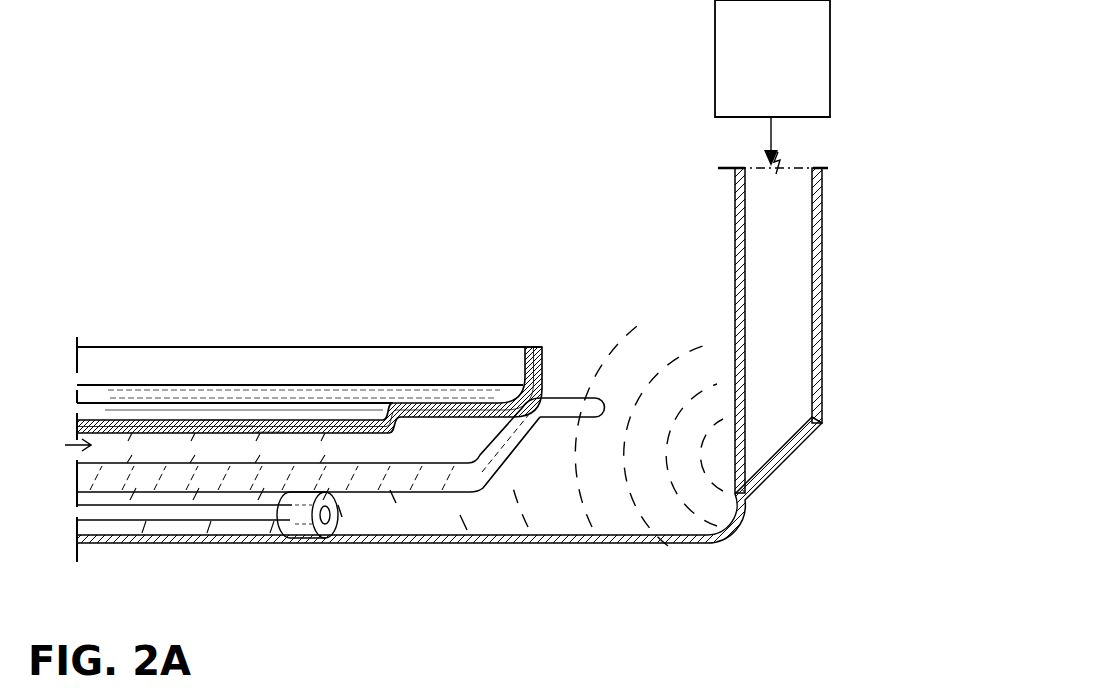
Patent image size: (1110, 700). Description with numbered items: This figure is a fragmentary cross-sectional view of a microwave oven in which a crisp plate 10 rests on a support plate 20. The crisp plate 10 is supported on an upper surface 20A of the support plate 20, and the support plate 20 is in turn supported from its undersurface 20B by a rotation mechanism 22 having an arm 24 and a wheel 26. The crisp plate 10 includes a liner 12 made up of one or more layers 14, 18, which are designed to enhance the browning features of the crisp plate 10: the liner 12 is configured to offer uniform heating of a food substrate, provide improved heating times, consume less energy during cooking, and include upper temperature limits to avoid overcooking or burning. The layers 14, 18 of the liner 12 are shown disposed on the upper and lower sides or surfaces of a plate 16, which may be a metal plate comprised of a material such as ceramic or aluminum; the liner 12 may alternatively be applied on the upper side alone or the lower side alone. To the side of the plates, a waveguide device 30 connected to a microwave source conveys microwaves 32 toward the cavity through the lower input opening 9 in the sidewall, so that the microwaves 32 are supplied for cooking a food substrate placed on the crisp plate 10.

The lower input opening 9 is at (740, 450).
The crisp plate 10 is at (378, 340).
The liner 12 is at (148, 417).
The layer of liner 14 is at (213, 420).
The plate 16 is at (240, 425).
The layer of liner 18 is at (270, 428).
The support plate 20 is at (553, 392).
The upper surface of support plate 20A is at (418, 463).
The undersurface of support plate 20B is at (427, 490).
The rotation mechanism 22 is at (137, 538).
The arm 24 is at (187, 512).
The wheel 26 is at (307, 527).
The waveguide device 30 is at (790, 302).
The microwaves 32 is at (580, 493).